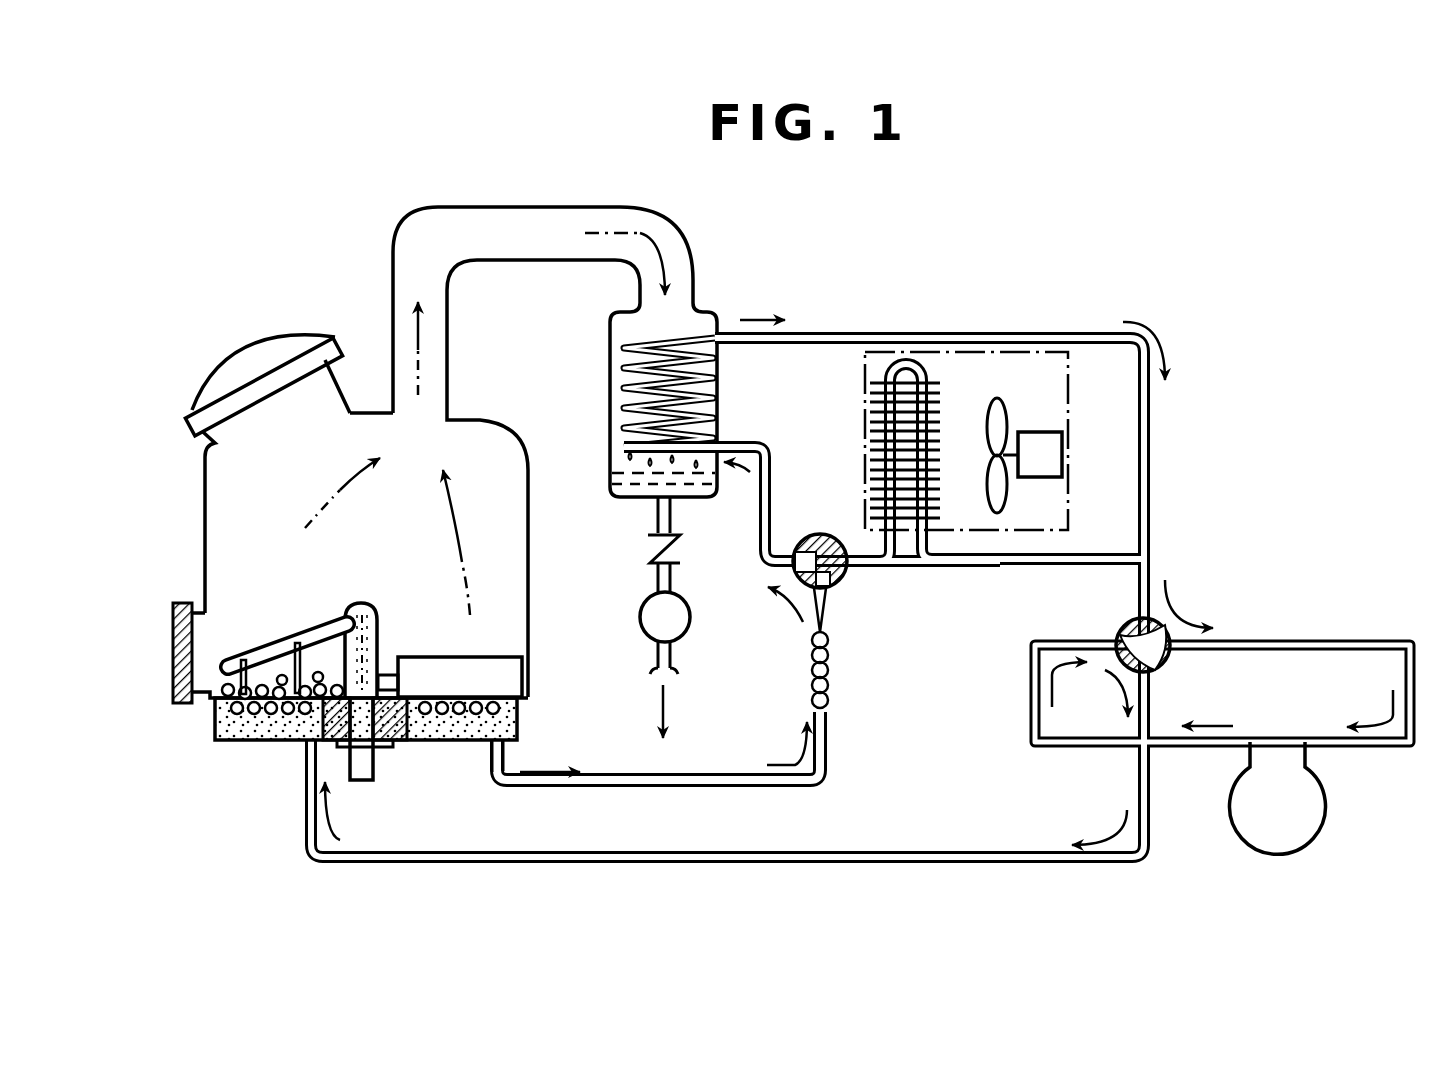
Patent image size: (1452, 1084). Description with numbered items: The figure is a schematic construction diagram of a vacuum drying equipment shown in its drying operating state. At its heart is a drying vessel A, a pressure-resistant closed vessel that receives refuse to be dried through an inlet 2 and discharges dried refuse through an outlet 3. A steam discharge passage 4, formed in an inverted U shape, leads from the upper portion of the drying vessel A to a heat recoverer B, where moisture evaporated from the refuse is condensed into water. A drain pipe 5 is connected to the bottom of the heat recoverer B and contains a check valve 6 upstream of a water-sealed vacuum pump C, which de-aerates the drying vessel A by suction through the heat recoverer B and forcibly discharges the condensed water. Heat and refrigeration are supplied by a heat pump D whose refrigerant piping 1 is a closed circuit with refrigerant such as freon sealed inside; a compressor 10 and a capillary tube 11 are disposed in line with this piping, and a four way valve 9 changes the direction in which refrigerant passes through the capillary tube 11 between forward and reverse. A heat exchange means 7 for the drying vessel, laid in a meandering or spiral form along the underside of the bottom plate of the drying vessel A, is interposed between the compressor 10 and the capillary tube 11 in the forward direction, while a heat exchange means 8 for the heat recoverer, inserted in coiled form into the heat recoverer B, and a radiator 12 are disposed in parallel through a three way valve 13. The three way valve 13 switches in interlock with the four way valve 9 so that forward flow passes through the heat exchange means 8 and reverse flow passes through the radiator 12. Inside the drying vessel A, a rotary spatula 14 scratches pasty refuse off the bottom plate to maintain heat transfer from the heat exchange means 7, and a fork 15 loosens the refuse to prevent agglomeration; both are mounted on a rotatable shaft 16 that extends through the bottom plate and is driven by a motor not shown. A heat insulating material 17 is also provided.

The refrigerant piping 1 is at (690, 866).
The inlet 2 is at (255, 405).
The outlet 3 is at (173, 645).
The steam discharge passage 4 is at (530, 215).
The drain pipe 5 is at (655, 583).
The check valve 6 is at (652, 556).
The heat exchange means for the drying vessel 7 is at (462, 744).
The heat exchange means for the heat recoverer 8 is at (718, 383).
The four way valve 9 is at (1124, 626).
The compressor 10 is at (1323, 814).
The capillary tube 11 is at (832, 665).
The radiator 12 is at (866, 440).
The three way valve 13 is at (842, 583).
The rotary spatula 14 is at (515, 678).
The fork 15 is at (266, 660).
The rotatable shaft 16 is at (372, 762).
The heat insulating material 17 is at (252, 744).
The drying vessel A is at (203, 510).
The heat recoverer B is at (606, 393).
The water-sealed vacuum pump C is at (693, 630).
The heat pump D is at (822, 866).